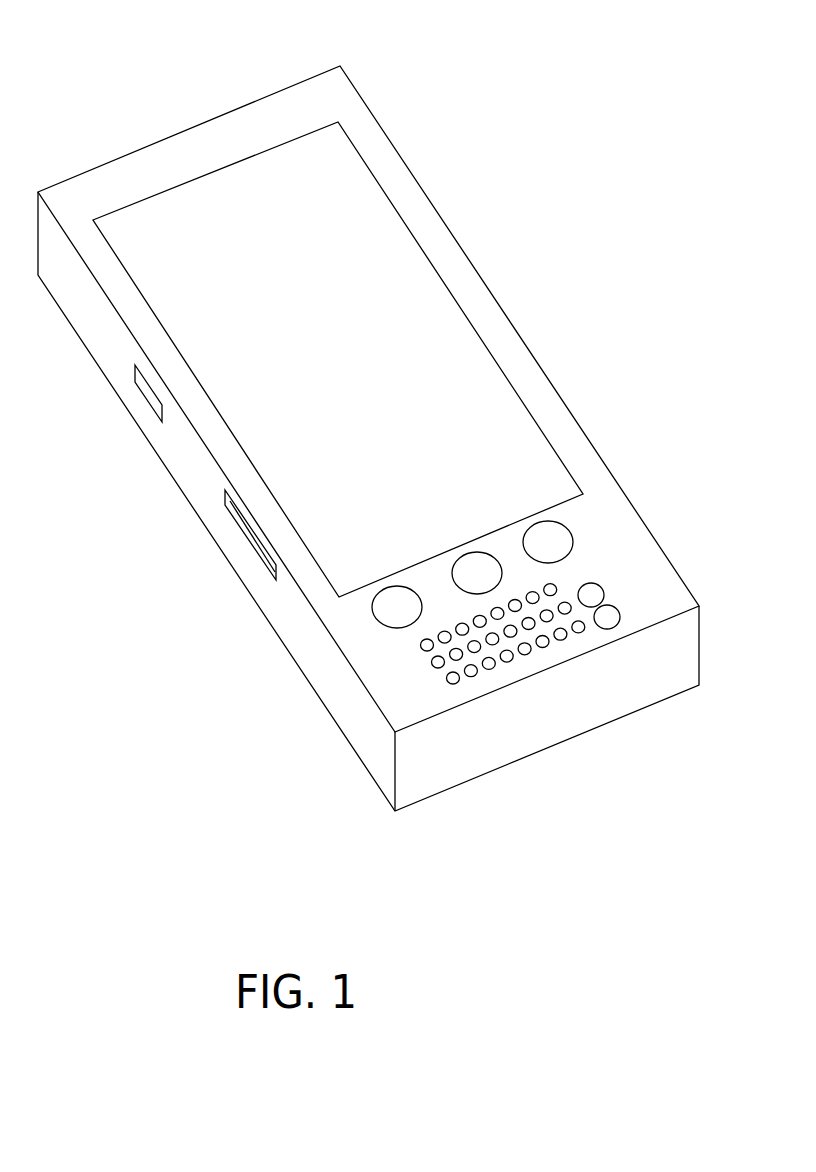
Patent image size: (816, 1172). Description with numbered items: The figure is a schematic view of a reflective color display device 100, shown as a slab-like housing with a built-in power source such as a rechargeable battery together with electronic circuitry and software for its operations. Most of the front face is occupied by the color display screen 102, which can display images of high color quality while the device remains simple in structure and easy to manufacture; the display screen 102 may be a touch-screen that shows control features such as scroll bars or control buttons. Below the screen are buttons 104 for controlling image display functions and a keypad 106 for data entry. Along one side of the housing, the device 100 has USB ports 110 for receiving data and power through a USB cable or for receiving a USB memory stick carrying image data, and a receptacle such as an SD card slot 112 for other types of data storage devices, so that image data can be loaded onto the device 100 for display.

The display device 100 is at (224, 91).
The color display screen 102 is at (482, 417).
The buttons 104 is at (557, 533).
The keypad 106 is at (435, 682).
The USB ports 110 is at (153, 412).
The SD card slot 112 is at (237, 520).